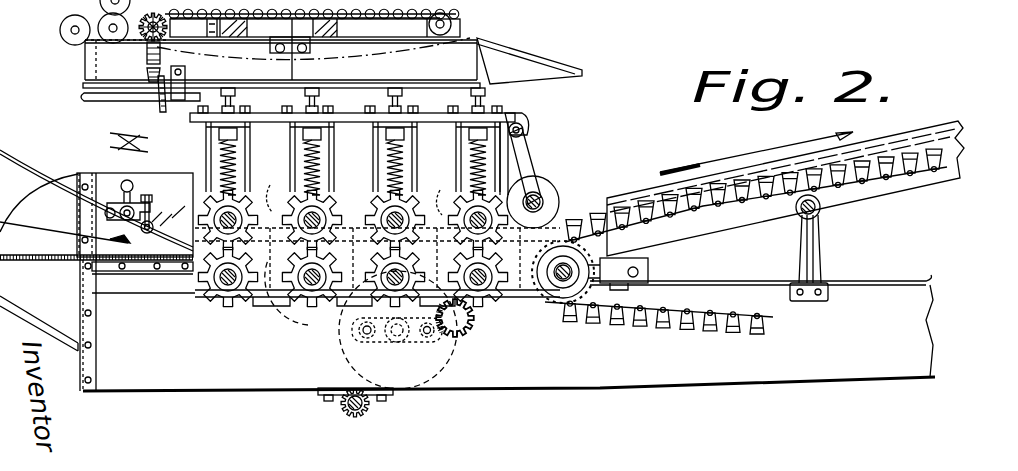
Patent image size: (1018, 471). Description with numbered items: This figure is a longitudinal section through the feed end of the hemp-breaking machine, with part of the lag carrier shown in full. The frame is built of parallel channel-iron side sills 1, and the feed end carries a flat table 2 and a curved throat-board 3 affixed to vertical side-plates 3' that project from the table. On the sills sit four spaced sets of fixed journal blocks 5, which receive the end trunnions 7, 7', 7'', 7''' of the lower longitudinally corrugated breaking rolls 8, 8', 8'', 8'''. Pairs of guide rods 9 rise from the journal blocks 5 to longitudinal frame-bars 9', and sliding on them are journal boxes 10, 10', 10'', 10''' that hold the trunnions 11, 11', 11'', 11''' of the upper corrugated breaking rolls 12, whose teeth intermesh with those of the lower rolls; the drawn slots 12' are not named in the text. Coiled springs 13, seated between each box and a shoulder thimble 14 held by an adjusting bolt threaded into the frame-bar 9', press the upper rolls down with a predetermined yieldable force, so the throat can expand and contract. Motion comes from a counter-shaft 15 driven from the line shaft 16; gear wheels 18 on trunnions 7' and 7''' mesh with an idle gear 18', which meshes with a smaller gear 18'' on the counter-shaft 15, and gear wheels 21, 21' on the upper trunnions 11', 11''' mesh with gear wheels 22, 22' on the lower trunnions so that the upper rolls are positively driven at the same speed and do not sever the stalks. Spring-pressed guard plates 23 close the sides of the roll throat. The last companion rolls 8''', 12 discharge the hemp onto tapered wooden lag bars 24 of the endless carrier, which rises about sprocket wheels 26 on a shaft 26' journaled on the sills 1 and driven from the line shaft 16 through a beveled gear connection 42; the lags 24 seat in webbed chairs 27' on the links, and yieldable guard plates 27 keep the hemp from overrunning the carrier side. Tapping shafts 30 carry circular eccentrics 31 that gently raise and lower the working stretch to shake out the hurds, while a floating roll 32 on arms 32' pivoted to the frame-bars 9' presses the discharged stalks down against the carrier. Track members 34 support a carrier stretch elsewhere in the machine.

The side sill 1 is at (509, 214).
The table 2 is at (25, 262).
The curved throat-board 3 is at (96, 188).
The side-plate 3' is at (96, 217).
The fixed journal block 5 is at (270, 302).
The end trunnion 7 is at (220, 291).
The end trunnion 7' is at (319, 271).
The end trunnion 7'' is at (403, 268).
The end trunnion 7''' is at (488, 267).
The longitudinally corrugated breaking roll 8 is at (220, 322).
The longitudinally corrugated breaking roll 8' is at (297, 328).
The longitudinally corrugated breaking roll 8'' is at (427, 307).
The longitudinally corrugated breaking roll 8''' is at (476, 318).
The guide rod 9 is at (312, 159).
The frame-bar 9' is at (351, 150).
The journal box 10 is at (179, 197).
The journal box 10' is at (427, 218).
The journal box 10'' is at (392, 322).
The journal box 10''' is at (584, 192).
The trunnion 11 is at (135, 215).
The trunnion 11' is at (207, 219).
The trunnion 11'' is at (325, 219).
The trunnion 11''' is at (484, 219).
The corrugated breaking roll 12 is at (169, 222).
The slot 12' is at (396, 180).
The coiled spring 13 is at (300, 135).
The shoulder thimble 14 is at (205, 134).
The counter-shaft 15 is at (335, 403).
The line shaft 16 is at (104, 102).
The gear wheel 18 is at (403, 330).
The idle gear wheel 18' is at (366, 321).
The gear wheel 18'' is at (399, 423).
The gear wheel 21 is at (269, 190).
The gear wheel 21' is at (439, 196).
The gear wheel 22 is at (280, 319).
The gear wheel 22' is at (532, 320).
The guard plate 23 is at (650, 268).
The lag bar 24 is at (838, 177).
The sprocket wheel 26 is at (636, 297).
The shaft 26' is at (138, 43).
The yieldable guard plate 27 is at (785, 167).
The webbed chair 27' is at (897, 193).
The tapping shaft 30 is at (822, 210).
The circular eccentric 31 is at (796, 220).
The floating roll 32 is at (555, 193).
The arm 32' is at (542, 164).
The track member 34 is at (345, 22).
The beveled gear connection 42 is at (170, 62).